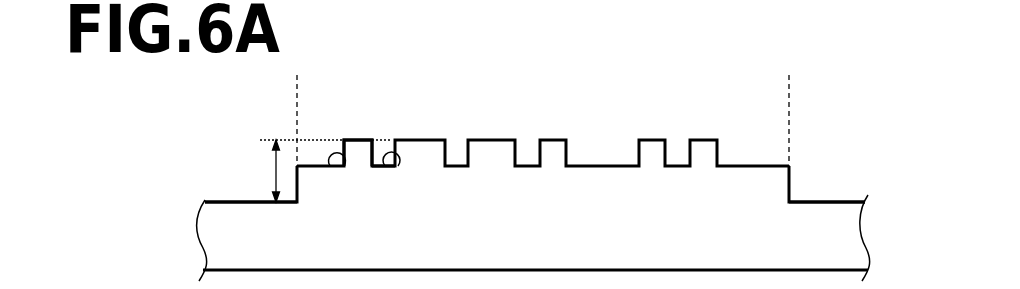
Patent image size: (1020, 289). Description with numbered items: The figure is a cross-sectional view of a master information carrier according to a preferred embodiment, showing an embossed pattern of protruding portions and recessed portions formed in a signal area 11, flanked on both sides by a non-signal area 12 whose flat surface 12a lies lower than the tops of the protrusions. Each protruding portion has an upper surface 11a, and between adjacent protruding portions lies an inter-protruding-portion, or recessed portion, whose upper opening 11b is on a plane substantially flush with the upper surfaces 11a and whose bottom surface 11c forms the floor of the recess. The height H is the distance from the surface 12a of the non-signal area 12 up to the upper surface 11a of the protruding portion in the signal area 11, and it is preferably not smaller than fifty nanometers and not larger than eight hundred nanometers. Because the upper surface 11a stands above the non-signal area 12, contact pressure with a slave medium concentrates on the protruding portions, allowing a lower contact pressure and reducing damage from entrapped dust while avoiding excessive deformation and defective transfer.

The signal area 11 is at (789, 93).
The upper surface of the protruding portion 11a is at (358, 140).
The upper opening of the inter-protruding-portion 11b is at (385, 140).
The bottom surface of the recessed portion 11c is at (400, 168).
The non-signal area 12 is at (297, 93).
The surface of the non-signal area 12a is at (216, 203).
The height H is at (268, 177).